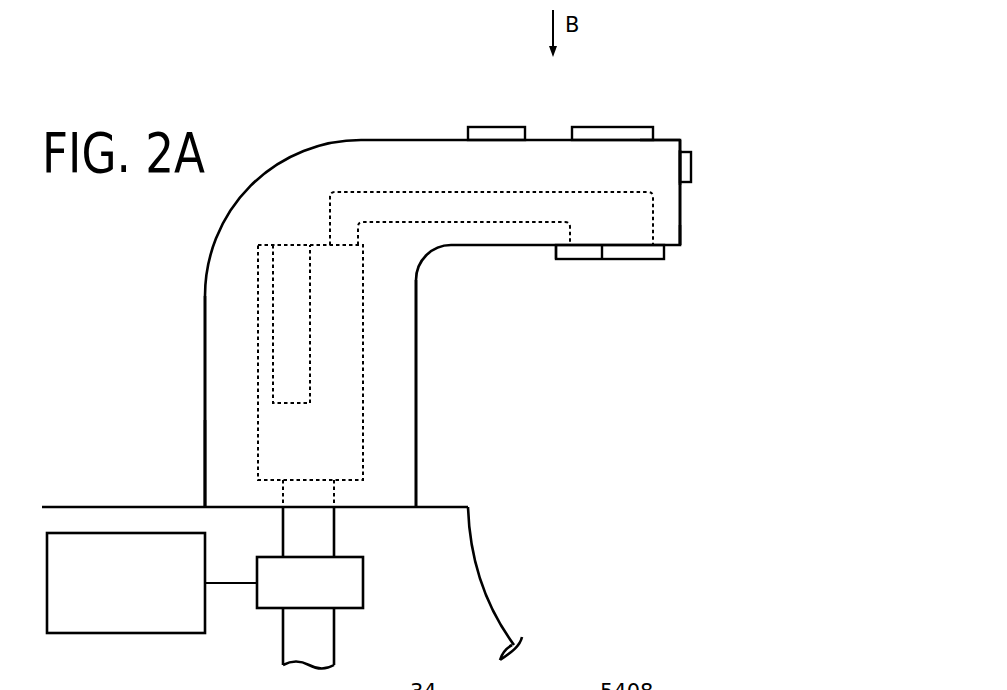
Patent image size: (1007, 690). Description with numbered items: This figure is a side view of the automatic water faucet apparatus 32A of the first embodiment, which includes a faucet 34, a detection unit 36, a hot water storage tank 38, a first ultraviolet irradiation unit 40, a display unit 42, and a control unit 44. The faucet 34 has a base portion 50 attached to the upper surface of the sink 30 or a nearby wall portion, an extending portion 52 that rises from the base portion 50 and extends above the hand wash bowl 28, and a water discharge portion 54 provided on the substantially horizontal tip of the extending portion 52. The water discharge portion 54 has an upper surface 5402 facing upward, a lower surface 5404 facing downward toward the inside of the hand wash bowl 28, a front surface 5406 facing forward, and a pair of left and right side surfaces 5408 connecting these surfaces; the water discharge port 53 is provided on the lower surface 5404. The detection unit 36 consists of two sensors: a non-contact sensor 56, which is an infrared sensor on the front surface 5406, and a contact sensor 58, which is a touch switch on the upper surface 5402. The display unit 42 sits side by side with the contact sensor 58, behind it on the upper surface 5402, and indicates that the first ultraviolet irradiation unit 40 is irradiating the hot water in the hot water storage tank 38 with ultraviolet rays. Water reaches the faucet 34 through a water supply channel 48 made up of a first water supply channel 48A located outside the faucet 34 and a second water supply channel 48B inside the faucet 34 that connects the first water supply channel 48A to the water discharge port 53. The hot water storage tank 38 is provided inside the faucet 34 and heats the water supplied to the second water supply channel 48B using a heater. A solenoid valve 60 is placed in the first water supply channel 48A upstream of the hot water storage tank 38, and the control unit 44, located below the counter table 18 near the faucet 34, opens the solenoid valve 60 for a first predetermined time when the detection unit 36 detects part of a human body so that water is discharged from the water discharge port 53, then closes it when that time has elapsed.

The automatic water faucet apparatus 32A is at (488, 340).
The faucet 34 is at (292, 163).
The extending portion 52 is at (205, 290).
The base portion 50 is at (205, 478).
The hot water storage tank 38 is at (363, 360).
The water discharge portion 54 is at (682, 203).
The upper surface 5402 is at (663, 140).
The side surfaces 5408 is at (650, 163).
The front surface 5406 is at (682, 231).
The lower surface 5404 is at (600, 260).
The water discharge port 53 is at (640, 260).
The display unit 42 is at (497, 127).
The contact sensor 58 is at (608, 127).
The non-contact sensor 56 is at (693, 165).
The detection unit 36 is at (698, 120).
The water supply channel 48 is at (468, 378).
The first water supply channel 48A is at (333, 540).
The second water supply channel 48B is at (405, 192).
The first ultraviolet irradiation unit 40 is at (272, 345).
The sink 30 is at (140, 507).
The counter table 18 is at (255, 470).
The control unit 44 is at (85, 533).
The solenoid valve 60 is at (363, 583).
The hand wash bowl 28 is at (488, 607).